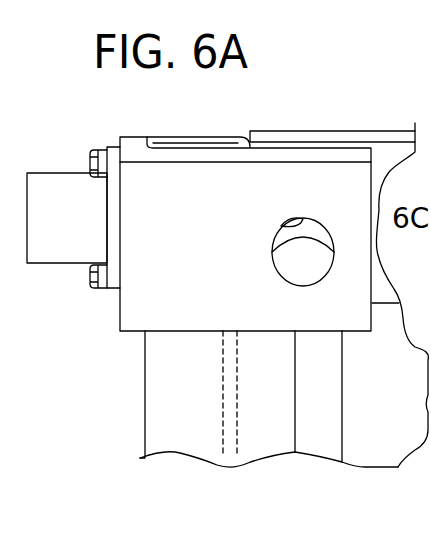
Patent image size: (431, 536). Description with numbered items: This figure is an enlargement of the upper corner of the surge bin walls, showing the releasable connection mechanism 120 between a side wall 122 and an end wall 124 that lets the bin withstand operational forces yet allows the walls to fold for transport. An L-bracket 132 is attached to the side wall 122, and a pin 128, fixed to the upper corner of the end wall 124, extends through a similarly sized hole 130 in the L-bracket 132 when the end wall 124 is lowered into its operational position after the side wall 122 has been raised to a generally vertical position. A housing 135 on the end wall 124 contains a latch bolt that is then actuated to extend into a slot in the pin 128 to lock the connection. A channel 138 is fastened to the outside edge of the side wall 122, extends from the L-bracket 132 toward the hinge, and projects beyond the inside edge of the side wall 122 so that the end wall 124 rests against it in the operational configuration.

The clamp assembly 120 is at (288, 112).
The side wall 122 is at (188, 136).
The end wall 124 is at (385, 129).
The pin 128 is at (295, 260).
The hole 130 is at (285, 227).
The L-bracket 132 is at (160, 285).
The housing 135 is at (63, 228).
The channel 138 is at (180, 400).